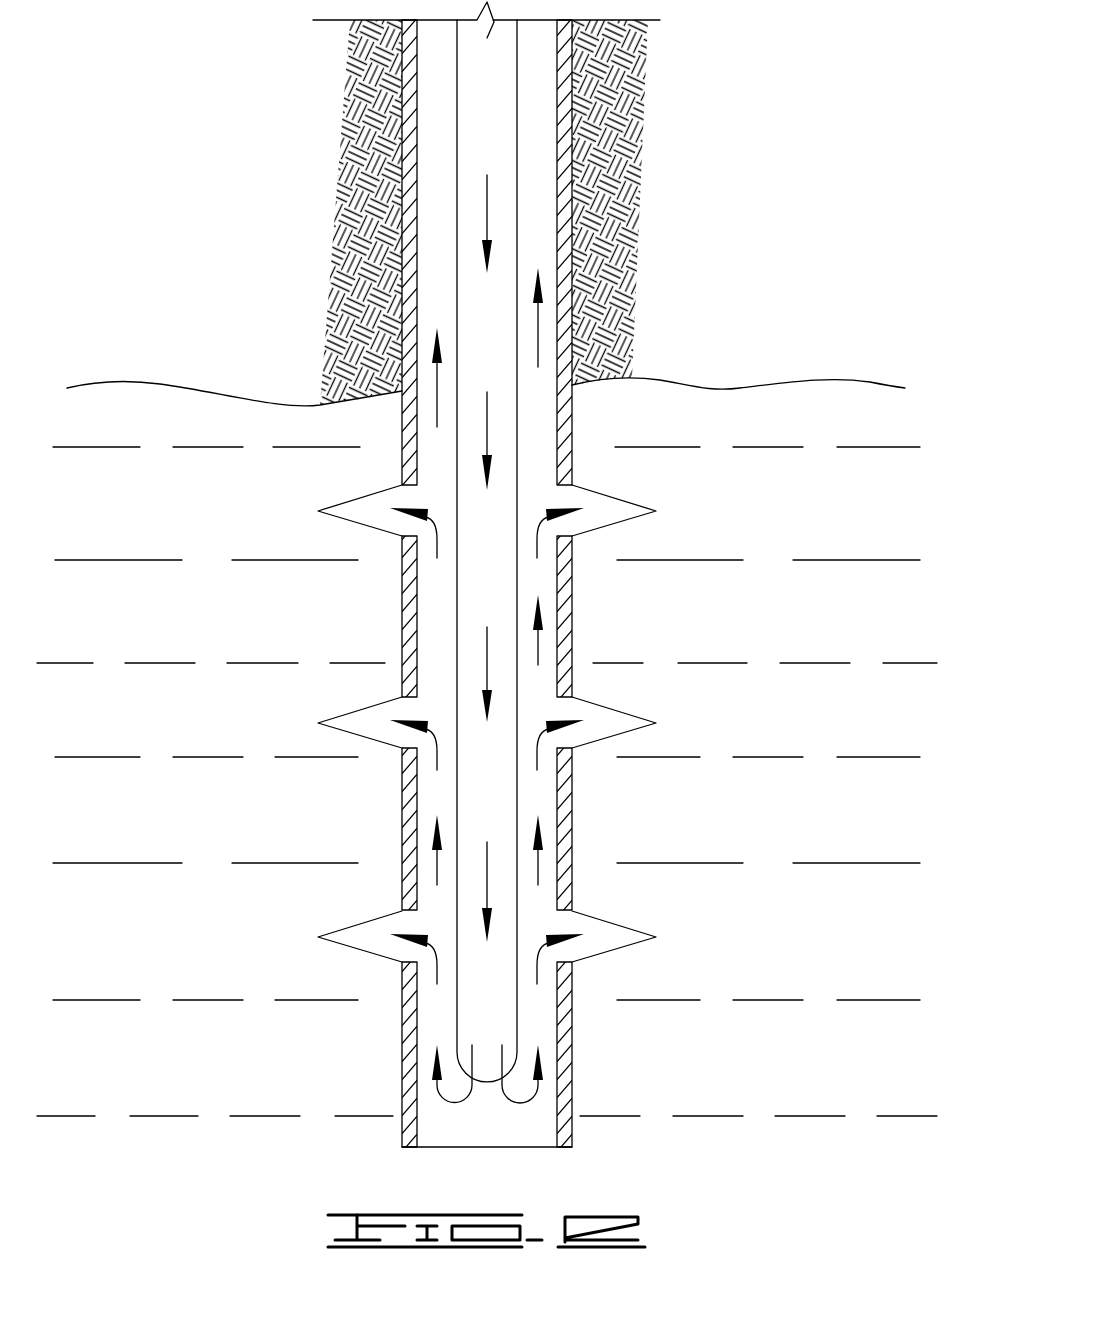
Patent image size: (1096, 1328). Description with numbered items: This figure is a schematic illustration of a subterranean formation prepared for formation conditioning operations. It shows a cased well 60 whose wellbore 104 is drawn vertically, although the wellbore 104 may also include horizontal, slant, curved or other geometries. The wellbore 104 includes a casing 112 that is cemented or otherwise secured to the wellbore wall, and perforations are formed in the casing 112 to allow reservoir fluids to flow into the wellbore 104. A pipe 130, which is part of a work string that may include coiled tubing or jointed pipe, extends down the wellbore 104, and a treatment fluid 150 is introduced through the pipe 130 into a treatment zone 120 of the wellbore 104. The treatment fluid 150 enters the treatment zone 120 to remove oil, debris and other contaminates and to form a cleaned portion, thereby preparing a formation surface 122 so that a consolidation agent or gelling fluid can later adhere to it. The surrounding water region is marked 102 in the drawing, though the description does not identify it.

The well 60 is at (754, 285).
The water / aquifer 102 is at (785, 631).
The wellbore 104 is at (538, 138).
The casing 112 is at (400, 100).
The treatment zone 120 is at (377, 515).
The formation surface 122 is at (350, 500).
The pipe 130 is at (457, 285).
The treatment fluid 150 is at (487, 660).